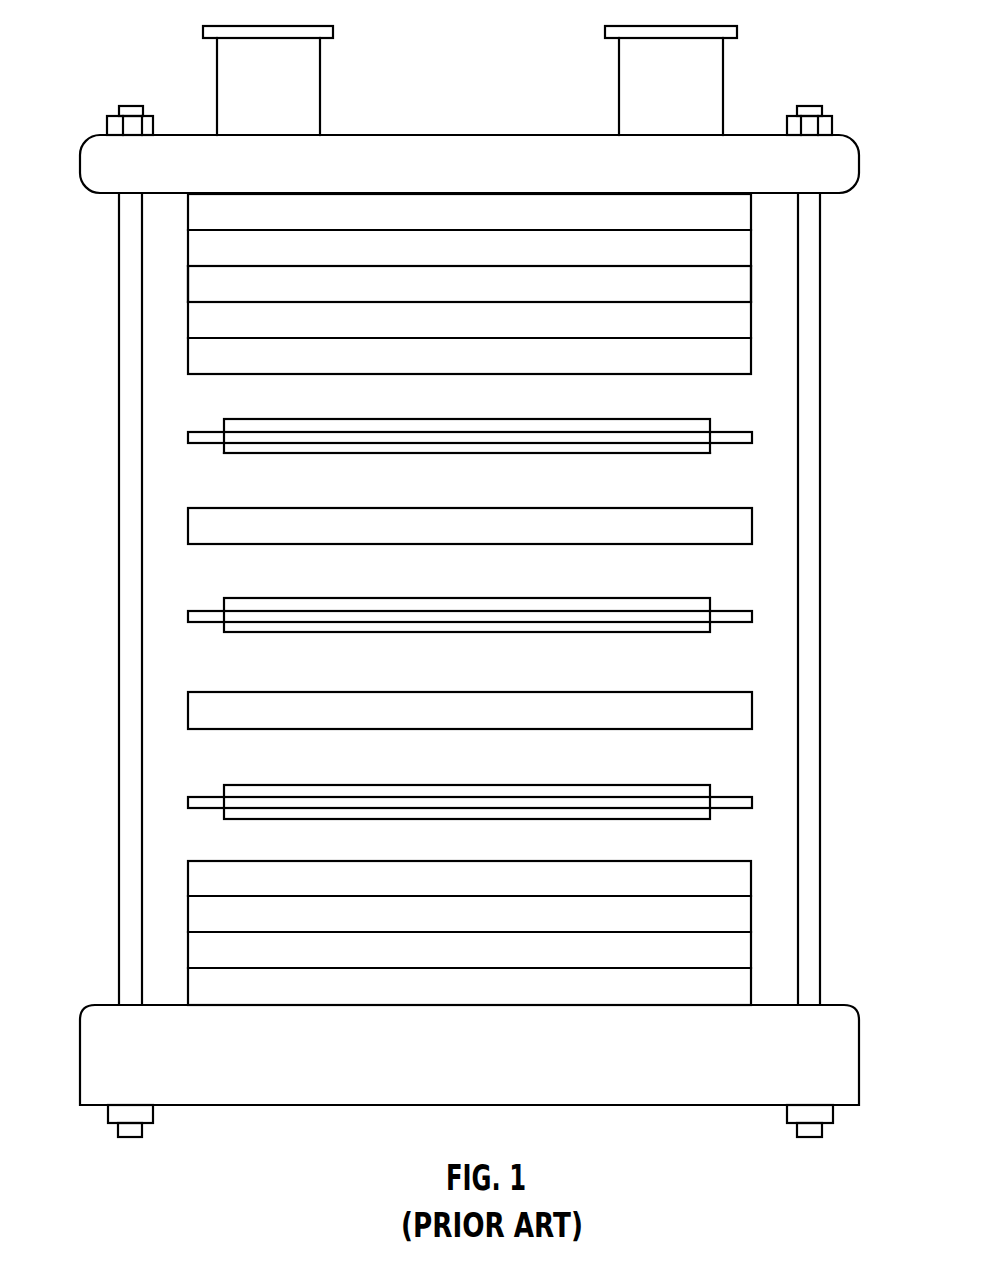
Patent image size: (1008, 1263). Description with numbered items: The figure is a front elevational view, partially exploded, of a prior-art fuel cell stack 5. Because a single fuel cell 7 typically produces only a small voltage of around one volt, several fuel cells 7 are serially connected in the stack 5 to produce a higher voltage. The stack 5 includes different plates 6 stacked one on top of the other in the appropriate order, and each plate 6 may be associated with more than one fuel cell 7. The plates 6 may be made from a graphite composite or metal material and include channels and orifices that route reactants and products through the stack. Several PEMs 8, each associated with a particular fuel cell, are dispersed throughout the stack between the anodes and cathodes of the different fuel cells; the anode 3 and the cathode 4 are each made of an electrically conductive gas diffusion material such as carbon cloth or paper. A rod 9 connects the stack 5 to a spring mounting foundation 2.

The spring mounting foundation 2 is at (501, 1055).
The anode 3 is at (553, 418).
The cathode 4 is at (553, 501).
The fuel cell stack 5 is at (469, 221).
The plates 6 is at (535, 557).
The fuel cell 7 is at (195, 283).
The PEMs 8 is at (535, 474).
The rod 9 is at (96, 599).